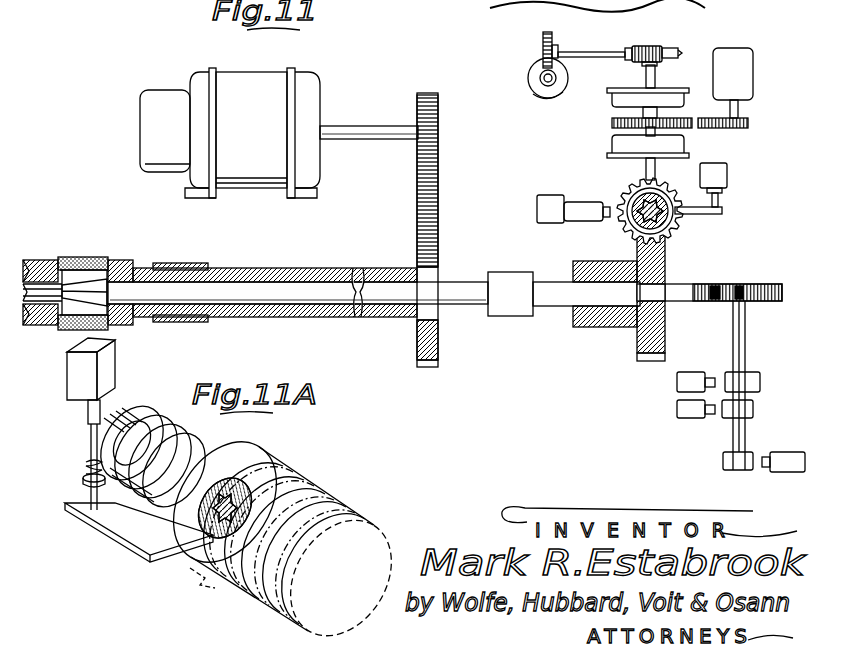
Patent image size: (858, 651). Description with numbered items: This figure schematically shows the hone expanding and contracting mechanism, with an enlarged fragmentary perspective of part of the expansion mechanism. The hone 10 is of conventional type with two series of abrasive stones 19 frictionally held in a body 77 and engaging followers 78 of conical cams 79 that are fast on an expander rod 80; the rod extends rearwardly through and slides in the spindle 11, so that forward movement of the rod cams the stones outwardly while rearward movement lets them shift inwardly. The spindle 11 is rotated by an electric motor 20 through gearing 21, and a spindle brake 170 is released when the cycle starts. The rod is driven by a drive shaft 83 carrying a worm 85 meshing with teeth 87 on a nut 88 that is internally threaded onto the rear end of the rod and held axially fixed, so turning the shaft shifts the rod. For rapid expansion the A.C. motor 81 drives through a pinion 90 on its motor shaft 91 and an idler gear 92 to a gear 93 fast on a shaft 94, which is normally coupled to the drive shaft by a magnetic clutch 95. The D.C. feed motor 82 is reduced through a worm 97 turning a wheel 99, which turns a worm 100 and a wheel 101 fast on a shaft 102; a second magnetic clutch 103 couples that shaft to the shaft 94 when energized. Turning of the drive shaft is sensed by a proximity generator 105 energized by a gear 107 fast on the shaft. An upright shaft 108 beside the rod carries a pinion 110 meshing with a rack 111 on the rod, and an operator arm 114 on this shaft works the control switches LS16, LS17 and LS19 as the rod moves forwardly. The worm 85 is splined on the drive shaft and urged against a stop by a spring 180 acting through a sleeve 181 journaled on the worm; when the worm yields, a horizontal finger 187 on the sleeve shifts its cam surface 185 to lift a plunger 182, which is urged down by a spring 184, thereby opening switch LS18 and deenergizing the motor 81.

In FIG. 11, the hone 10 is at (40, 244).
In FIG. 11, the spindle 11 is at (362, 275).
In FIG. 11, the abrasive stones 19 is at (80, 257).
In FIG. 11, the electric motor 20 is at (257, 85).
In FIG. 11, the gearing 21 is at (446, 235).
In FIG. 11, the body 77 is at (32, 268).
In FIG. 11, the followers 78 is at (88, 288).
In FIG. 11, the conical cams 79 is at (98, 290).
In FIG. 11, the expander rod 80 is at (361, 306).
In FIG. 11, the rapid expansion motor 81 is at (753, 74).
In FIG. 11, the feed motor 82 is at (540, 93).
In FIG. 11, the drive shaft 83 is at (655, 172).
In FIG. 11A, the drive shaft 83 is at (132, 428).
In FIG. 11, the worm 85 is at (687, 214).
In FIG. 11A, the worm 85 is at (348, 514).
In FIG. 11, the teeth 87 is at (640, 360).
In FIG. 11A, the teeth 87 is at (190, 577).
In FIG. 11, the nut 88 is at (596, 322).
In FIG. 11, the pinion 90 is at (746, 126).
In FIG. 11, the motor shaft 91 is at (740, 109).
In FIG. 11, the idler gear 92 is at (710, 128).
In FIG. 11, the gear 93 is at (618, 124).
In FIG. 11, the shaft 94 is at (645, 112).
In FIG. 11, the magnetic clutch 95 is at (601, 151).
In FIG. 11, the worm 97 is at (545, 73).
In FIG. 11, the wheel 99 is at (543, 45).
In FIG. 11, the worm 100 is at (651, 46).
In FIG. 11, the wheel 101 is at (677, 53).
In FIG. 11, the shaft 102 is at (657, 74).
In FIG. 11, the second magnetic clutch 103 is at (631, 87).
In FIG. 11, the proximity generator 105 is at (602, 184).
In FIG. 11, the gear 107 is at (617, 228).
In FIG. 11, the upright shaft 108 is at (745, 341).
In FIG. 11, the pinion 110 is at (743, 287).
In FIG. 11, the rack 111 is at (688, 287).
In FIG. 11, the operator arm 114 is at (725, 462).
In FIG. 11, the spindle brake 170 is at (148, 141).
In FIG. 11A, the spring 180 is at (168, 438).
In FIG. 11A, the sleeve 181 is at (240, 455).
In FIG. 11A, the plunger 182 is at (88, 447).
In FIG. 11A, the spring 184 is at (86, 468).
In FIG. 11A, the cam surface 185 is at (86, 502).
In FIG. 11A, the finger 187 is at (132, 542).
In FIG. 11, the control switch LS16 is at (677, 381).
In FIG. 11, the control switch LS17 is at (677, 408).
In FIG. 11, the control switch LS18 is at (728, 184).
In FIG. 11A, the control switch LS18 is at (112, 379).
In FIG. 11, the control switch LS19 is at (793, 468).